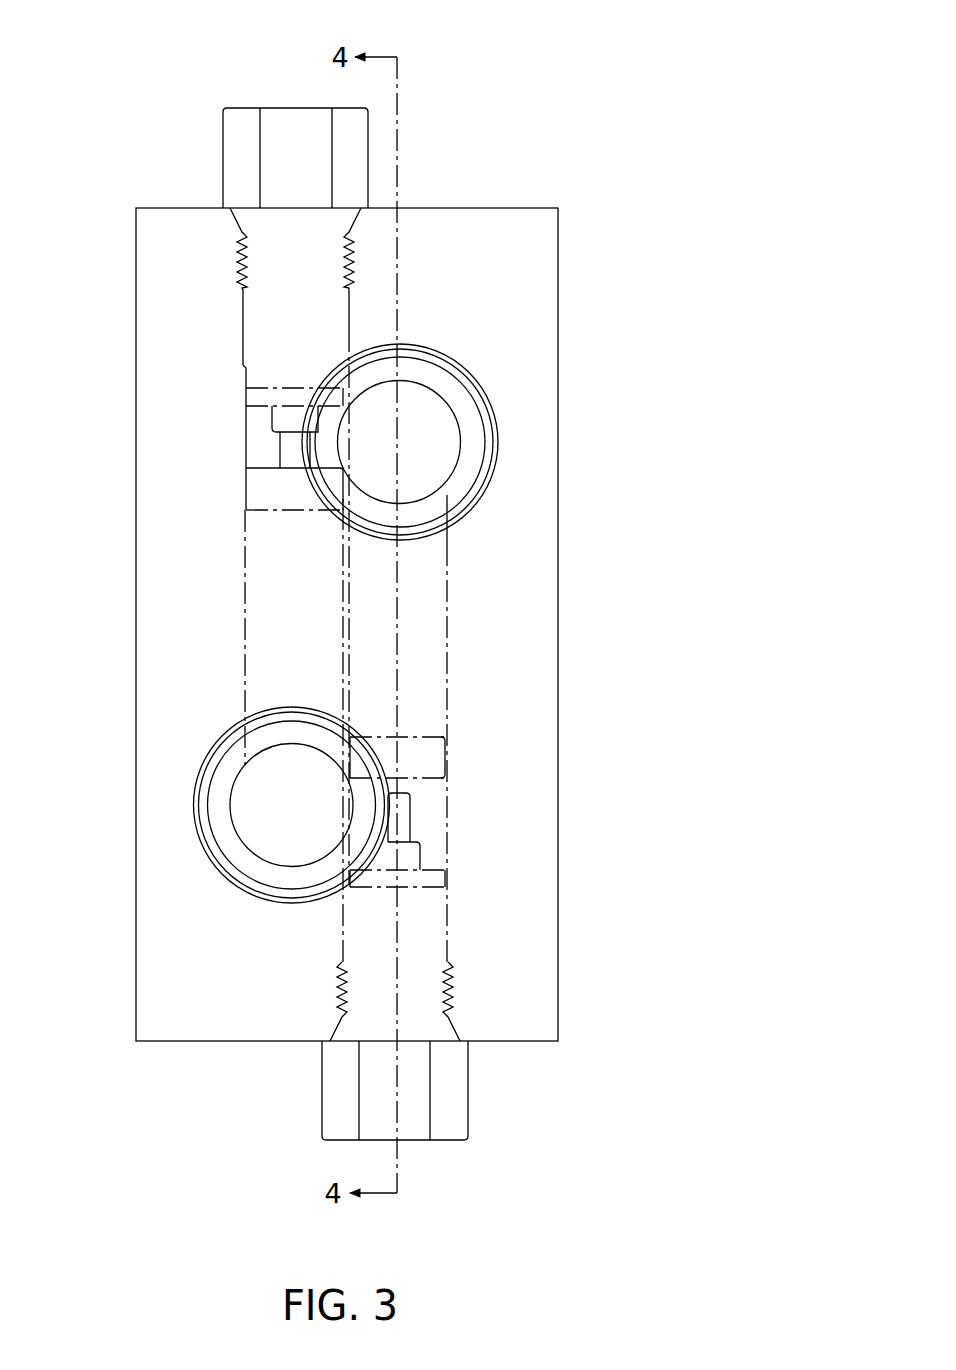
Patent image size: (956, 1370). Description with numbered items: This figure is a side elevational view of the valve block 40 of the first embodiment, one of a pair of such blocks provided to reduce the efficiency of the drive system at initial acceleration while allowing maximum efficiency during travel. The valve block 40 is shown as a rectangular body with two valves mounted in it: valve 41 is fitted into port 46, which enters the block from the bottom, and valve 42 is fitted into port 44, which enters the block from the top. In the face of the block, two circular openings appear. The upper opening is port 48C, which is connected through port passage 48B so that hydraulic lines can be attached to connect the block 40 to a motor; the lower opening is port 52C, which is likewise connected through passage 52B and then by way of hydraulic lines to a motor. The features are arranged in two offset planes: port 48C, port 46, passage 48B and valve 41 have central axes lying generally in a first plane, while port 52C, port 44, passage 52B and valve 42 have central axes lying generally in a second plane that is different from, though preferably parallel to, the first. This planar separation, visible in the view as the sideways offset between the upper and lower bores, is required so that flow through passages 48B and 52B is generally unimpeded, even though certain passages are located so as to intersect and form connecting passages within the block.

The valve block 40 is at (532, 120).
The valve 41 is at (442, 1163).
The valve 42 is at (256, 86).
The port 44 is at (245, 637).
The port 46 is at (446, 612).
The port passage 48B is at (435, 438).
The port 48C is at (475, 382).
The passage 52B is at (253, 810).
The port 52C is at (217, 868).